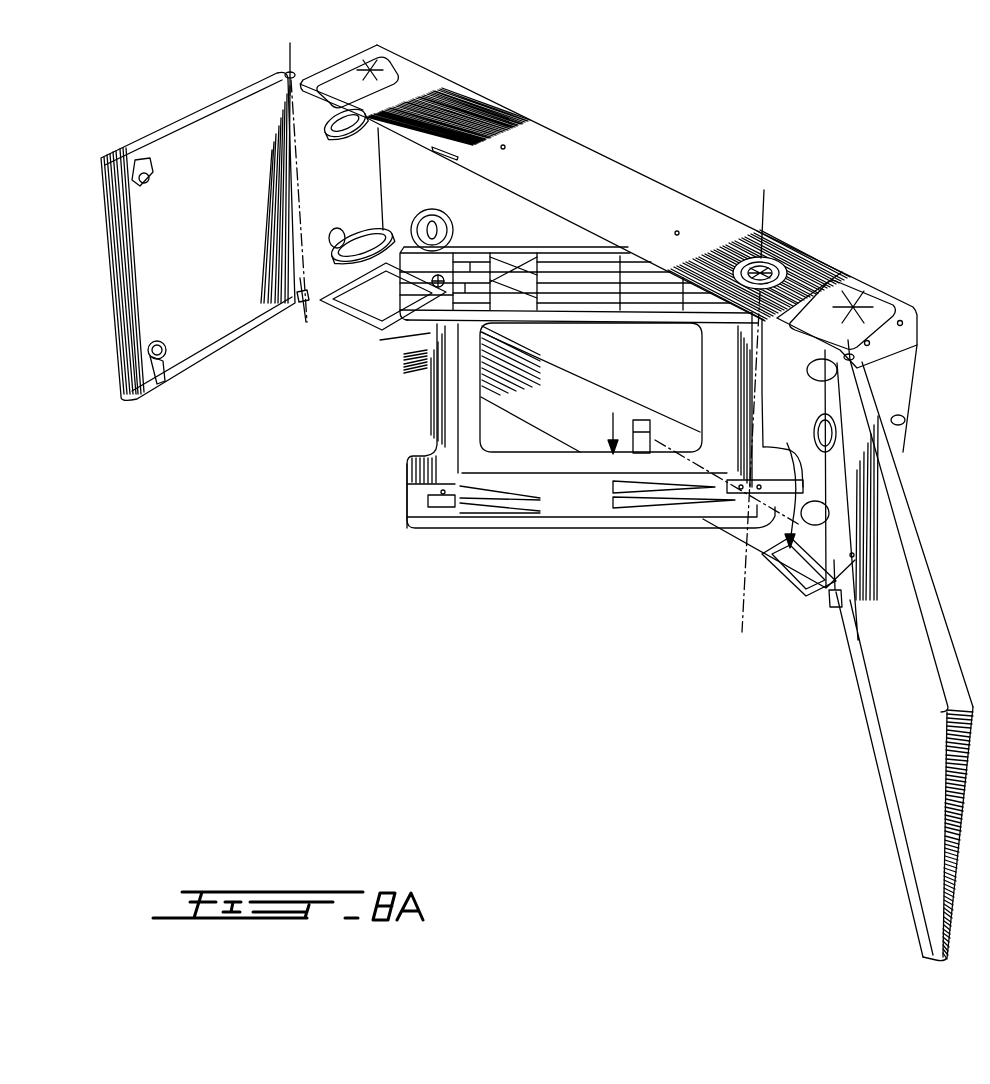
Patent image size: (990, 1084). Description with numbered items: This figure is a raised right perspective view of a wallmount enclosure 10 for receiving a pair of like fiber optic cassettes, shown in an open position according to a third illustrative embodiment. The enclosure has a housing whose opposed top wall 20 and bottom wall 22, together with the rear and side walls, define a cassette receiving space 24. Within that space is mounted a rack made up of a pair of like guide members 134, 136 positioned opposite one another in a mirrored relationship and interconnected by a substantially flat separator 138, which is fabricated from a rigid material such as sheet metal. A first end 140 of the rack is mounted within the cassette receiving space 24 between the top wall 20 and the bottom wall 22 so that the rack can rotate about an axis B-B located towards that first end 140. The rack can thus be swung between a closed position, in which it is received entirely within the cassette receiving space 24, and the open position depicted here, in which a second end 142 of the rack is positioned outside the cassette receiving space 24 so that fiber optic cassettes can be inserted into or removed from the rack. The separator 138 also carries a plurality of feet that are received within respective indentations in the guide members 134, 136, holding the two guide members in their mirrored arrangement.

The wallmount enclosure 10 is at (690, 148).
The top wall 20 is at (619, 203).
The bottom wall 22 is at (742, 535).
The cassette receiving space 24 is at (513, 227).
The guide member 134 is at (540, 318).
The guide member 136 is at (568, 500).
The separator 138 is at (460, 415).
The first end 140 is at (750, 333).
The second end 142 is at (437, 397).